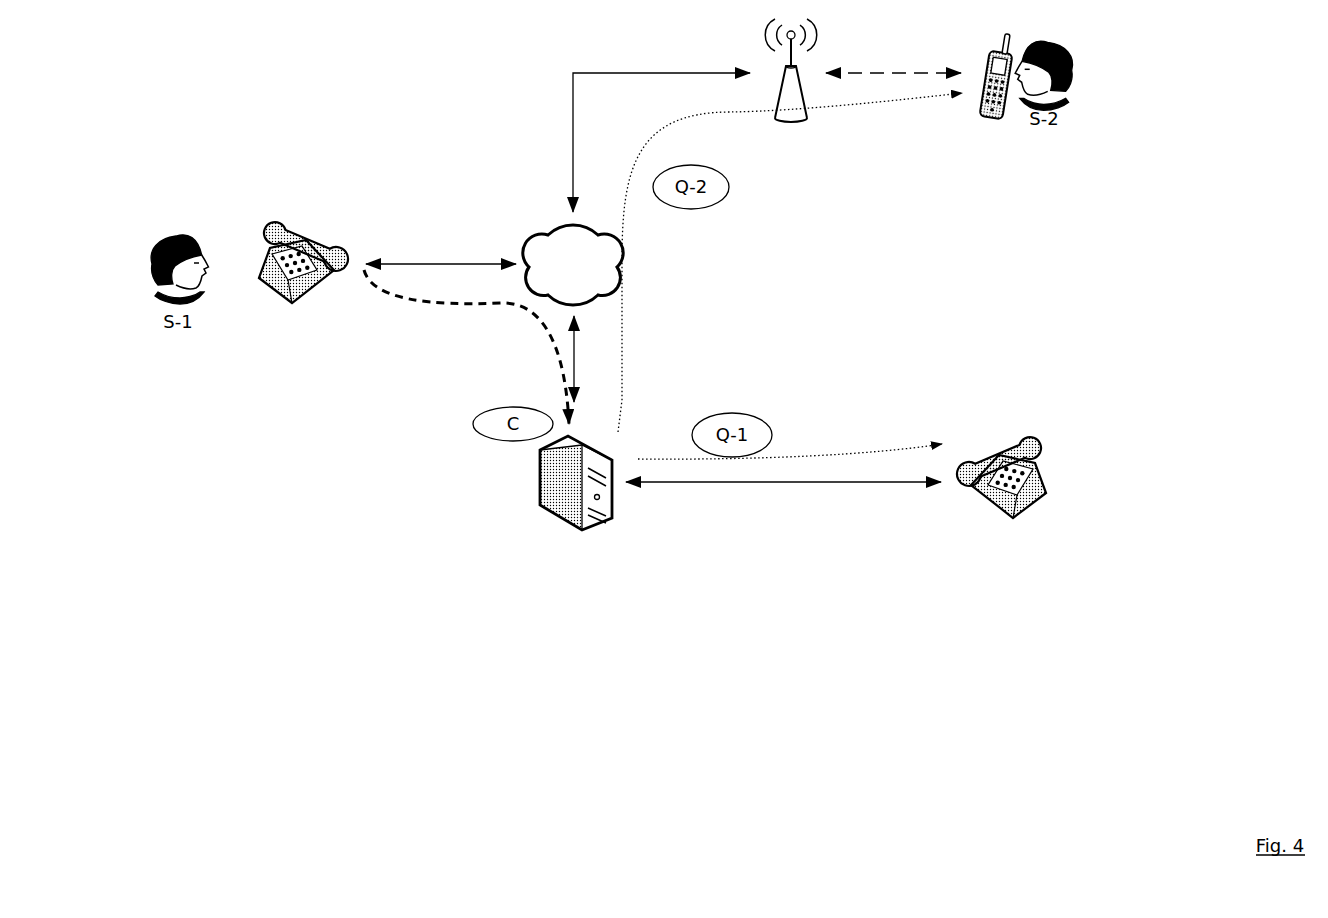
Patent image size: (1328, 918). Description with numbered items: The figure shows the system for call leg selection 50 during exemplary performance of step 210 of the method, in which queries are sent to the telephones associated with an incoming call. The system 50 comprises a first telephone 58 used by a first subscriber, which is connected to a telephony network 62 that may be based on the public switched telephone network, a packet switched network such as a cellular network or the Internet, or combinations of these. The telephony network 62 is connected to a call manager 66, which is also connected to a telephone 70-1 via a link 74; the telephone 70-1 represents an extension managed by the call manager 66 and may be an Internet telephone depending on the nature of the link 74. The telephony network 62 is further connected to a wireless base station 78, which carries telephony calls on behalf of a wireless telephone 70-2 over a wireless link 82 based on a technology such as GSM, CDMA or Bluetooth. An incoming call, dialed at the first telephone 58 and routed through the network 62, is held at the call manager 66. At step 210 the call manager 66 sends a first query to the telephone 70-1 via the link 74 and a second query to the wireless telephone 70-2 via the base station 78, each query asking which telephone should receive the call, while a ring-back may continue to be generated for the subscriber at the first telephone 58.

The system for call leg selection 50 is at (221, 709).
The first telephone 58 is at (296, 333).
The telephony network 62 is at (562, 277).
The call manager 66 is at (570, 531).
The telephone 70-1 is at (1002, 549).
The wireless telephone 70-2 is at (1003, 134).
The link 74 is at (757, 479).
The wireless base station 78 is at (798, 133).
The wireless link 82 is at (889, 78).
The step 210 is at (411, 771).